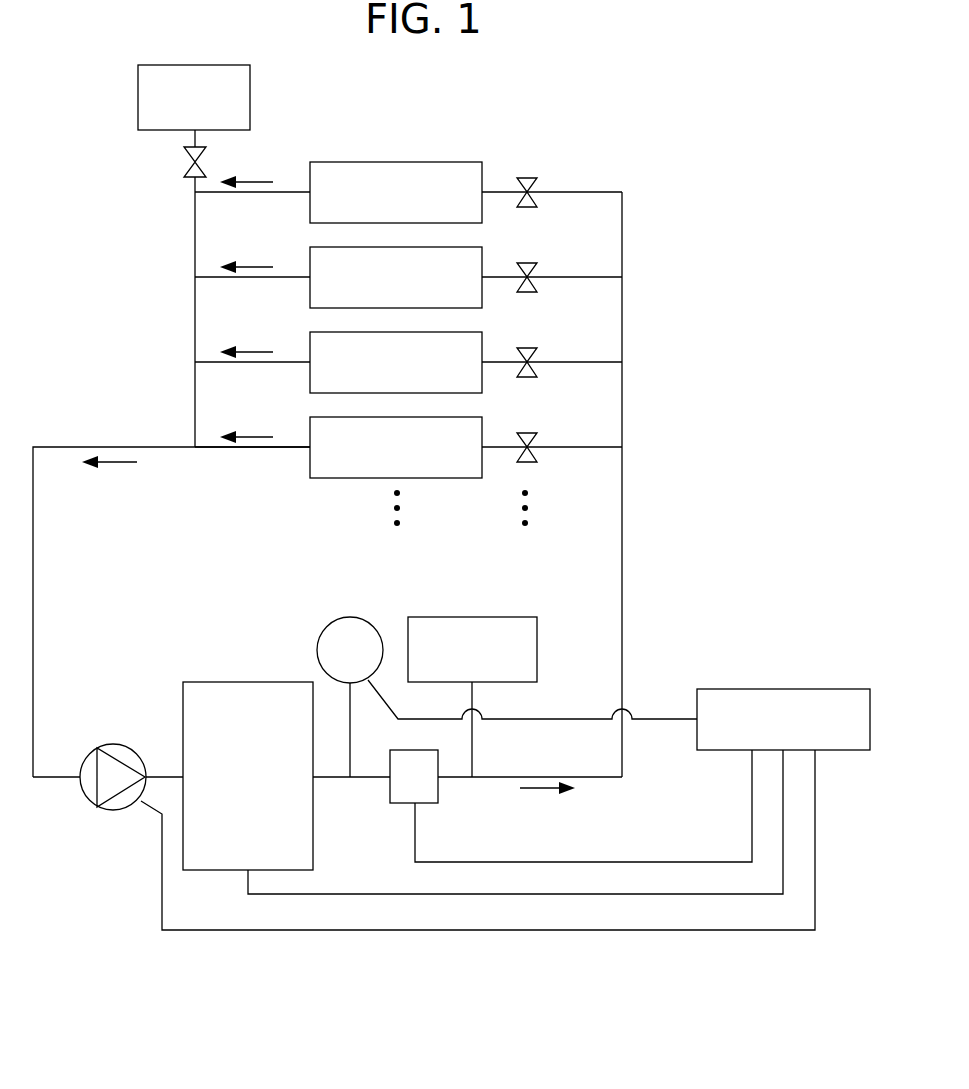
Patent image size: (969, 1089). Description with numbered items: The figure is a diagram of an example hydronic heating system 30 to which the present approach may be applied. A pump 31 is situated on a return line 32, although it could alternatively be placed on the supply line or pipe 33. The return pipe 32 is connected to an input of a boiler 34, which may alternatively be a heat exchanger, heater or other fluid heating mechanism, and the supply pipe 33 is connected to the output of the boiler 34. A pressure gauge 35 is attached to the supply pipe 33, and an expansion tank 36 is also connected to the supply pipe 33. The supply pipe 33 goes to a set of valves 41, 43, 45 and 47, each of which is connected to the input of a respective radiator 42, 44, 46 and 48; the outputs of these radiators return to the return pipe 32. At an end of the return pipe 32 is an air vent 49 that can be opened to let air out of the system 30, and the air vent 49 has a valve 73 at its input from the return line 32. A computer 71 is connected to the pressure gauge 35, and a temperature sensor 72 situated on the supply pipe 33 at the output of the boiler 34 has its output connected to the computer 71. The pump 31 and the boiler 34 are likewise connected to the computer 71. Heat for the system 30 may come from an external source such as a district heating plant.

The hydronic heating system 30 is at (613, 134).
The pump 31 is at (113, 744).
The return line 32 is at (195, 190).
The supply pipe 33 is at (333, 778).
The boiler 34 is at (230, 682).
The pressure gauge 35 is at (317, 650).
The expansion tank 36 is at (472, 617).
The valve 41 is at (537, 200).
The radiator 42 is at (482, 172).
The valve 43 is at (537, 285).
The radiator 44 is at (482, 257).
The valve 45 is at (537, 370).
The radiator 46 is at (482, 342).
The valve 47 is at (537, 455).
The radiator 48 is at (482, 427).
The air vent 49 is at (138, 96).
The computer 71 is at (783, 689).
The temperature sensor 72 is at (398, 803).
The valve 73 is at (184, 162).